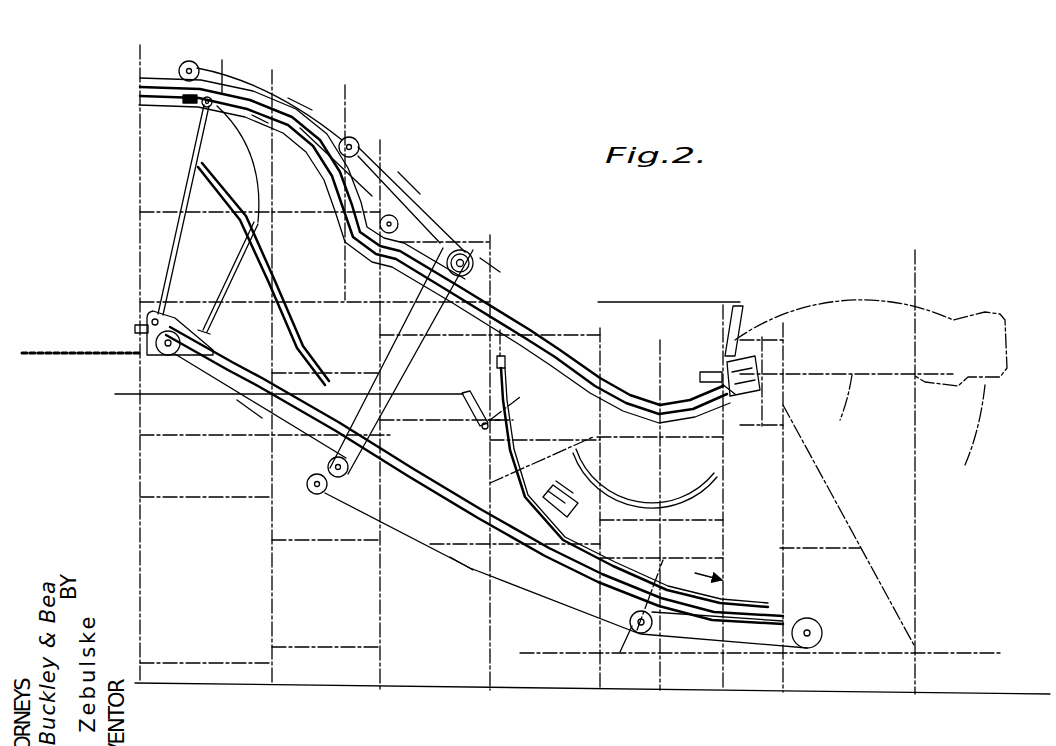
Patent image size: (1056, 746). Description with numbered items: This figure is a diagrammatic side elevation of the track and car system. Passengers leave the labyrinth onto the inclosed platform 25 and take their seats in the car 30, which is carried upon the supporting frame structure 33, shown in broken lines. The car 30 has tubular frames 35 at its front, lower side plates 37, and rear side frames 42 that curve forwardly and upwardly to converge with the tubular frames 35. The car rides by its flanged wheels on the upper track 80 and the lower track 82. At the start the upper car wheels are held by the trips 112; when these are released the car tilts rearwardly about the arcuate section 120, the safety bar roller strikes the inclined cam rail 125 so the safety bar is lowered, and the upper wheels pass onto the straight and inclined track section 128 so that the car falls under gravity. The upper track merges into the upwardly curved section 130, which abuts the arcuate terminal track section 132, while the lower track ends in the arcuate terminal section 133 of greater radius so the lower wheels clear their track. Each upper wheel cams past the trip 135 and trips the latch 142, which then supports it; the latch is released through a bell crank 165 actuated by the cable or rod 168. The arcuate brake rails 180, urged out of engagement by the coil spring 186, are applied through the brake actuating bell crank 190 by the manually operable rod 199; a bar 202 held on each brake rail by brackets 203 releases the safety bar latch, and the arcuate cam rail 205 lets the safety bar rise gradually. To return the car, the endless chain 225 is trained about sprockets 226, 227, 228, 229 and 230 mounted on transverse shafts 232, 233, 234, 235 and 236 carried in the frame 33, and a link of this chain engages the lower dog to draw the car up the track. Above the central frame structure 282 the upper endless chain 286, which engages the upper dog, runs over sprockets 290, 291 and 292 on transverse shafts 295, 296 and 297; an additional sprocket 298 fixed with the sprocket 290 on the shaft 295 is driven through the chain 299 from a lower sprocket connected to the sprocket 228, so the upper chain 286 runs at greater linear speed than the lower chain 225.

The inclosed platform 25 is at (76, 352).
The car 30 is at (182, 217).
The supporting frame structure 33 is at (158, 492).
The tubular frames 35 is at (197, 148).
The lower side plates 37 is at (187, 320).
The rear side frames 42 is at (240, 258).
The upper track 80 is at (517, 327).
The lower track 82 is at (436, 492).
The trips 112 is at (216, 100).
The arcuate section of the track 120 is at (305, 158).
The inclined cam rail 125 is at (270, 273).
The straight and inclined track section 128 is at (434, 264).
The upwardly curved section 130 is at (708, 380).
The arcuate terminal track section 132 is at (757, 368).
The arcuate terminal section 133 is at (699, 604).
The trip 135 is at (709, 398).
The latch 142 is at (755, 383).
The bell crank 165 is at (733, 306).
The cable or rod 168 is at (655, 302).
The brake rails 180 is at (510, 405).
The coil spring 186 is at (503, 354).
The brake actuating bell crank 190 is at (480, 430).
The manually operable rod 199 is at (128, 394).
The bar 202 is at (546, 494).
The brackets 203 is at (556, 509).
The arcuate cam rail 205 is at (637, 502).
The endless chain 225 is at (690, 638).
The sprocket 226 is at (812, 627).
The sprocket 227 is at (160, 350).
The sprocket 228 is at (345, 474).
The sprocket 229 is at (317, 492).
The sprocket 230 is at (630, 629).
The transverse shaft 232 is at (814, 638).
The transverse shaft 233 is at (136, 338).
The transverse shaft 234 is at (330, 464).
The transverse shaft 235 is at (310, 484).
The transverse shaft 236 is at (630, 620).
The central frame structure 282 is at (364, 185).
The endless chain 286 is at (423, 207).
The sprocket 290 is at (476, 257).
The sprocket 291 is at (362, 146).
The sprocket 292 is at (199, 70).
The transverse shaft 295 is at (474, 265).
The transverse shaft 296 is at (353, 142).
The transverse shaft 297 is at (190, 61).
The additional sprocket 298 is at (461, 251).
The chain 299 is at (418, 361).